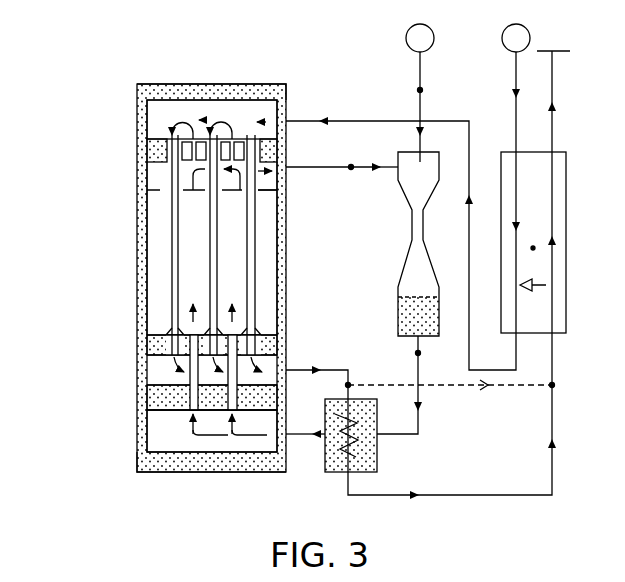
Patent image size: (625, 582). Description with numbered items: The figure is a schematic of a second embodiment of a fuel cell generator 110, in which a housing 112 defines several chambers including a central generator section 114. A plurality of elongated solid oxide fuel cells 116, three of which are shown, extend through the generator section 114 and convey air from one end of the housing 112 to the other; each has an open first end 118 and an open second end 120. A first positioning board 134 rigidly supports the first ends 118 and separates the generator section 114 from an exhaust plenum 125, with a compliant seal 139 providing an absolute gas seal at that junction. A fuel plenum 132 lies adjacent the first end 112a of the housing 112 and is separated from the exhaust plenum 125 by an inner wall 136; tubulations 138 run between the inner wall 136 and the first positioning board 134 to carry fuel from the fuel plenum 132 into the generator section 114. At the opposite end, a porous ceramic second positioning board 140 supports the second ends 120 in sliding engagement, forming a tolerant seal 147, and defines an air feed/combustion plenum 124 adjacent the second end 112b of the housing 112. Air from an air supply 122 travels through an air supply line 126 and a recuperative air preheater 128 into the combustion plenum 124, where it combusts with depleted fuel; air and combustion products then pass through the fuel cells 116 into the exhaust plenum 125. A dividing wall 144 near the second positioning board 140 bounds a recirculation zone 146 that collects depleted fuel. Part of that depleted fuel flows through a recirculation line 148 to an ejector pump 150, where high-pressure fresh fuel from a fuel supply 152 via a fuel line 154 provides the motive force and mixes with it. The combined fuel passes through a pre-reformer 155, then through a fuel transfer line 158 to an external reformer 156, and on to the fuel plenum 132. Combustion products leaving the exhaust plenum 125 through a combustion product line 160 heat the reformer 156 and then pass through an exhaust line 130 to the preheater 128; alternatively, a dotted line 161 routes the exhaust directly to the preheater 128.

The fuel cell generator 110 is at (100, 40).
The housing 112 is at (261, 80).
The first end of the housing 112a is at (138, 462).
The second end of the housing 112b is at (140, 88).
The generator section 114 is at (158, 292).
The fuel cells 116 is at (247, 245).
The first end 118 is at (173, 338).
The second end 120 is at (248, 137).
The air supply 122 is at (507, 33).
The air feed/combustion plenum 124 is at (155, 117).
The exhaust plenum 125 is at (158, 372).
The air supply line 126 is at (468, 270).
The recuperative air preheater 128 is at (567, 255).
The exhaust line 130 is at (552, 413).
The fuel plenum 132 is at (158, 437).
The first positioning board 134 is at (150, 345).
The inner wall 136 is at (159, 400).
The tubulations 138 is at (190, 377).
The seal 139 is at (167, 334).
The second positioning board 140 is at (155, 157).
The dividing wall 144 is at (268, 190).
The recirculation zone 146 is at (157, 183).
The tolerant seal 147 is at (163, 146).
The recirculation line 148 is at (320, 163).
The ejector pump 150 is at (410, 242).
The fuel supply 152 is at (410, 33).
The fuel line 154 is at (423, 82).
The pre-reformer 155 is at (398, 314).
The external reformer 156 is at (378, 452).
The fuel transfer line 158 is at (421, 393).
The combustion product line 160 is at (334, 369).
The line 161 is at (503, 388).